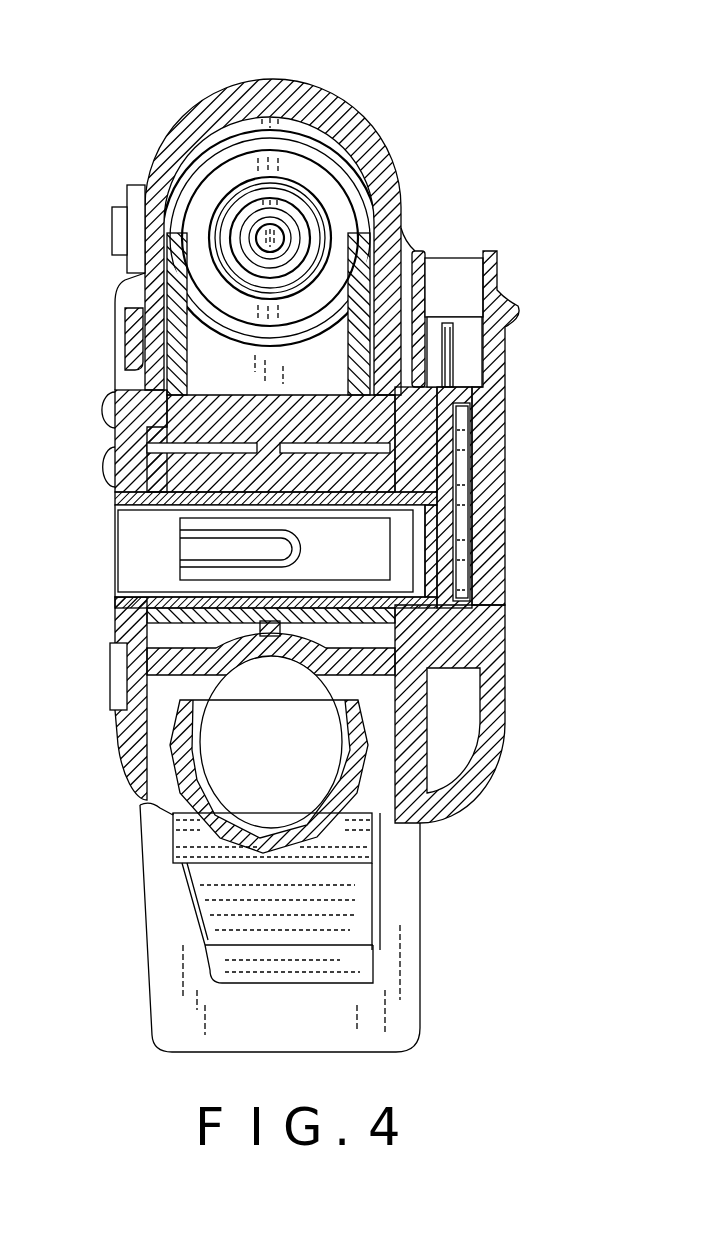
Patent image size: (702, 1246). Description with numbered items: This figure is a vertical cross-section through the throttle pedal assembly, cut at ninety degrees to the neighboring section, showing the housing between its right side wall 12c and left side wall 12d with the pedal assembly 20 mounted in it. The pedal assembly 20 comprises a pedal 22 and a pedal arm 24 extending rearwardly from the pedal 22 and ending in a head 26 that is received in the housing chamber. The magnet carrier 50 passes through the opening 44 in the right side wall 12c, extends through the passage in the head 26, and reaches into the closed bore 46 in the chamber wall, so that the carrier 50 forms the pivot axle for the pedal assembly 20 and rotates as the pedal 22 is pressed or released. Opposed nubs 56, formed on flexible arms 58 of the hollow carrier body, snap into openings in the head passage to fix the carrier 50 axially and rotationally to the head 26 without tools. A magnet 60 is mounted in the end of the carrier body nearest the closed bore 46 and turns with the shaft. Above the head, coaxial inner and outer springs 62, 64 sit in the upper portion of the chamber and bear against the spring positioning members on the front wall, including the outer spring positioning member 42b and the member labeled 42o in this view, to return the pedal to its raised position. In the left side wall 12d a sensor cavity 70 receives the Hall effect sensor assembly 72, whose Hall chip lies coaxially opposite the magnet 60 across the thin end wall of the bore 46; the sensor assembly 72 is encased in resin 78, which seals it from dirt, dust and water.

The right side wall 12c is at (115, 637).
The left side wall 12d is at (505, 463).
The pedal assembly 20 is at (147, 890).
The pedal 22 is at (420, 913).
The pedal arm 24 is at (362, 860).
The head 26 is at (140, 812).
The outer spring positioning member 42b is at (200, 185).
The shaft axis / inner ring 42o is at (260, 220).
The opening 44 is at (128, 490).
The closed bore 46 is at (437, 483).
The magnet carrier 50 is at (96, 620).
The nubs 56 is at (148, 445).
The flexible arms 58 is at (247, 548).
The magnet 60 is at (430, 560).
The inner spring 62 is at (293, 200).
The outer spring 64 is at (277, 157).
The sensor cavity 70 is at (460, 393).
The Hall effect sensor assembly 72 is at (463, 497).
The resin 78 is at (442, 597).